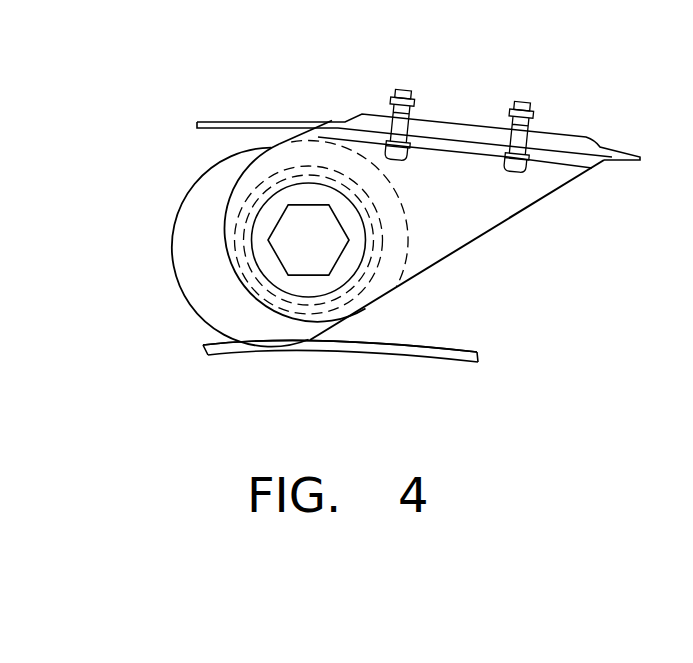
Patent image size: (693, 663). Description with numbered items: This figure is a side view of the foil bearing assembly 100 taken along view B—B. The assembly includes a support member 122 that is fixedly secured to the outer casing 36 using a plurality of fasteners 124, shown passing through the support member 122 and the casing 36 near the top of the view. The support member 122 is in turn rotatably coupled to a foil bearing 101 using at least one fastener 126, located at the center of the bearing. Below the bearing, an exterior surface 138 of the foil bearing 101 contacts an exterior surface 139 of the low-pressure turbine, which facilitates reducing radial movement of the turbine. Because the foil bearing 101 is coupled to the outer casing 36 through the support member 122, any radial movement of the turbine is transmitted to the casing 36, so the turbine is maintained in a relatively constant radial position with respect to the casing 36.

The casing 36 is at (283, 121).
The foil bearing assembly 100 is at (196, 164).
The foil bearing 101 is at (208, 223).
The support member 122 is at (471, 226).
The fasteners 124 is at (520, 104).
The fastener 126 is at (328, 233).
The exterior surface 138 is at (264, 334).
The exterior surface 139 is at (229, 341).